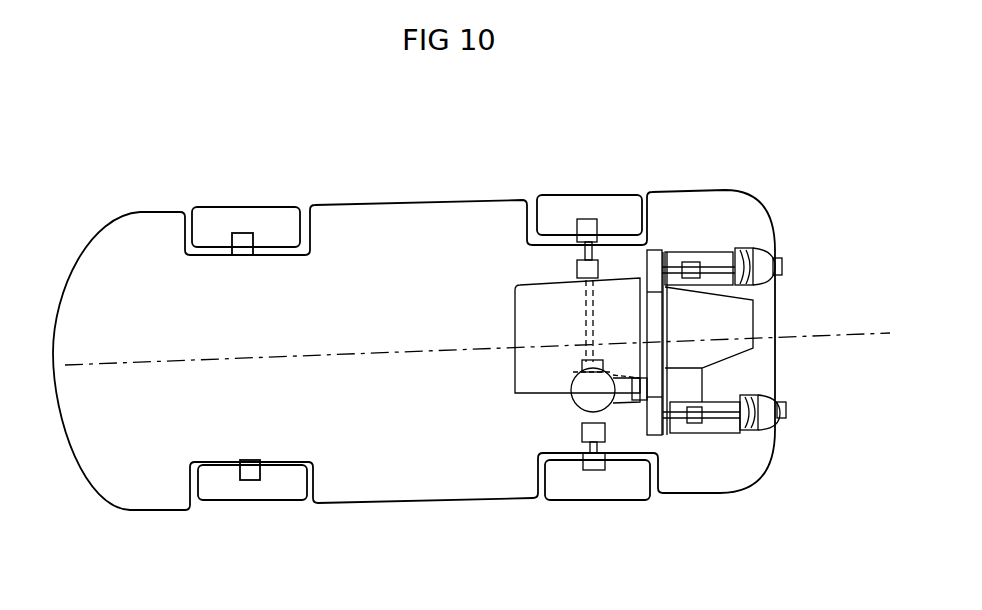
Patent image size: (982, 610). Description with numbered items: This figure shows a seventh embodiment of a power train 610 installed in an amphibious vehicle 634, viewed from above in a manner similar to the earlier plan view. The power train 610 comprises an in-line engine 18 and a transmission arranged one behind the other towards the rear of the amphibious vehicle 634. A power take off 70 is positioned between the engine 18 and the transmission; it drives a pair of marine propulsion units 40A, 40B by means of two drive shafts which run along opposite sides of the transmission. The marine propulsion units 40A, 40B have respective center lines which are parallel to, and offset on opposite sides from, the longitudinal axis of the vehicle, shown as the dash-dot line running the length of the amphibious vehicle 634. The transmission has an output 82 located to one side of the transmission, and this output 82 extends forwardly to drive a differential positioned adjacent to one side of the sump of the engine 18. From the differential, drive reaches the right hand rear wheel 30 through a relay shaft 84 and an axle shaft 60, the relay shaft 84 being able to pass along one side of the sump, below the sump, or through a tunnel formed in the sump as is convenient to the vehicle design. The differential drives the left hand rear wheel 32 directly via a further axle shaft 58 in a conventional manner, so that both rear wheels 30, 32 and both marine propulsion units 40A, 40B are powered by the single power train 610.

The amphibious vehicle 634 is at (260, 313).
The power train 610 is at (507, 378).
The in-line engine 18 is at (557, 343).
The relay shaft 84 is at (585, 315).
The right hand rear wheel 30 is at (567, 217).
The axle shaft 60 is at (589, 262).
The further axle shaft 58 is at (605, 462).
The left hand rear wheel 32 is at (577, 480).
The power take off 70 is at (658, 242).
The output 82 is at (677, 387).
The marine propulsion unit 40A is at (758, 244).
The marine propulsion unit 40B is at (763, 437).